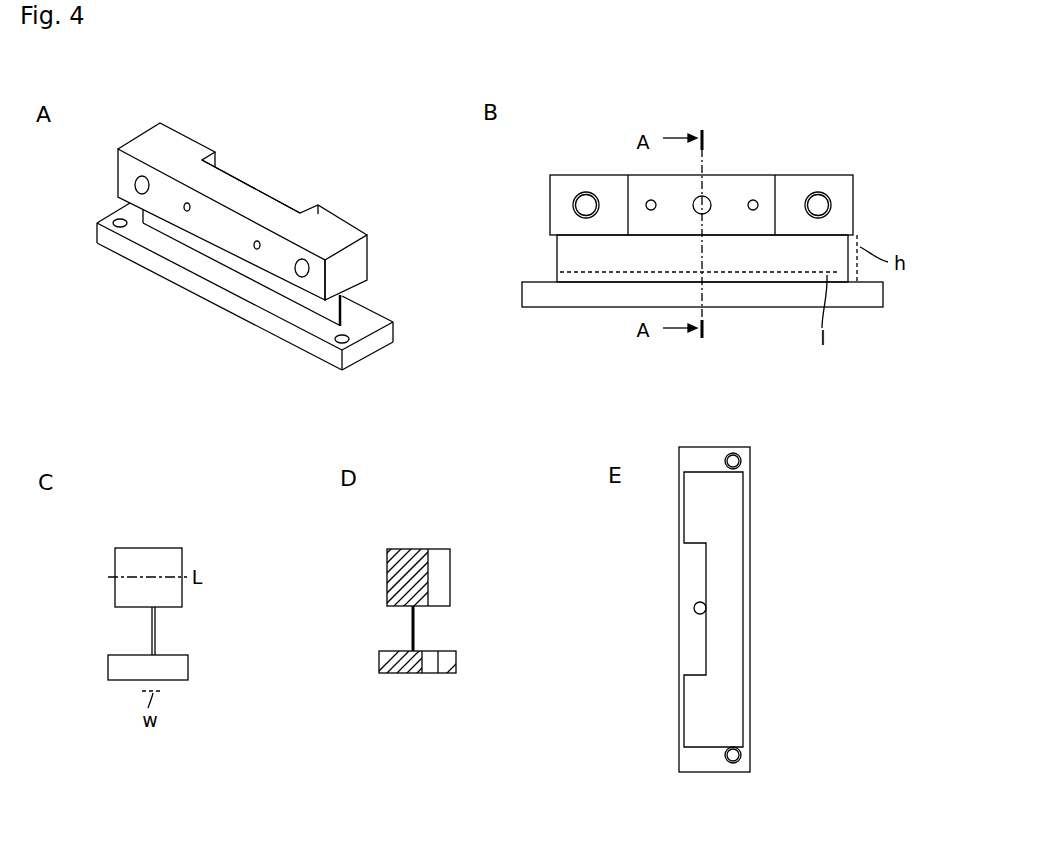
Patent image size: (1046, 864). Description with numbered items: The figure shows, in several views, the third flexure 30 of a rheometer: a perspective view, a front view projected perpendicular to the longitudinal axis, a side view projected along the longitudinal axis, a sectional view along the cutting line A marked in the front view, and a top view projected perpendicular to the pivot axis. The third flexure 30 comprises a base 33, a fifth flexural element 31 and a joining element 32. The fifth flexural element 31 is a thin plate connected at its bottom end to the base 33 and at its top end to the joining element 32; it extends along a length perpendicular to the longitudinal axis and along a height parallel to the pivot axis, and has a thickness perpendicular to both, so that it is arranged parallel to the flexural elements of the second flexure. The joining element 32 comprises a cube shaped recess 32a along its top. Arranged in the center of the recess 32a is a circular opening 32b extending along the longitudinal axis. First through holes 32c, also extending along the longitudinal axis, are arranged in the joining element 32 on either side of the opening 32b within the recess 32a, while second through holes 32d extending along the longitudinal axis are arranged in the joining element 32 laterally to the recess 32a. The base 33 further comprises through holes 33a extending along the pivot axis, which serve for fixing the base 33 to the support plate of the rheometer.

The third flexure 30 is at (204, 124).
The fifth flexural element 31 is at (330, 313).
The joining element 32 is at (358, 257).
The cube shaped recess 32a is at (262, 177).
The circular opening 32b is at (703, 198).
The first through holes 32c is at (185, 211).
The second through holes 32d is at (136, 185).
The base 33 is at (190, 282).
The through holes 33a is at (97, 233).